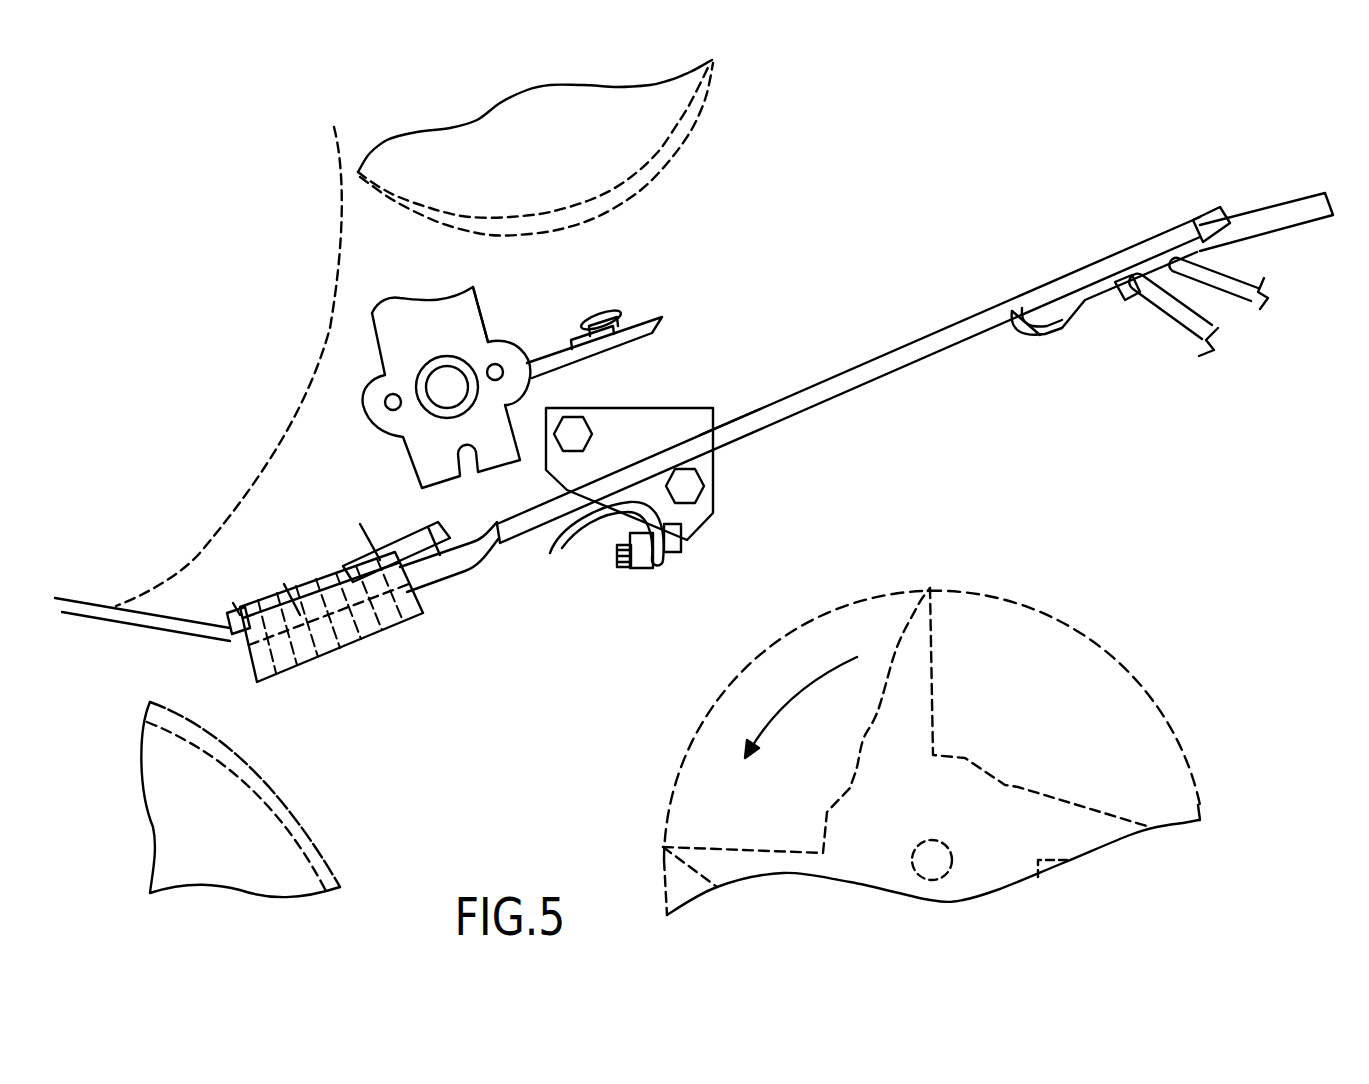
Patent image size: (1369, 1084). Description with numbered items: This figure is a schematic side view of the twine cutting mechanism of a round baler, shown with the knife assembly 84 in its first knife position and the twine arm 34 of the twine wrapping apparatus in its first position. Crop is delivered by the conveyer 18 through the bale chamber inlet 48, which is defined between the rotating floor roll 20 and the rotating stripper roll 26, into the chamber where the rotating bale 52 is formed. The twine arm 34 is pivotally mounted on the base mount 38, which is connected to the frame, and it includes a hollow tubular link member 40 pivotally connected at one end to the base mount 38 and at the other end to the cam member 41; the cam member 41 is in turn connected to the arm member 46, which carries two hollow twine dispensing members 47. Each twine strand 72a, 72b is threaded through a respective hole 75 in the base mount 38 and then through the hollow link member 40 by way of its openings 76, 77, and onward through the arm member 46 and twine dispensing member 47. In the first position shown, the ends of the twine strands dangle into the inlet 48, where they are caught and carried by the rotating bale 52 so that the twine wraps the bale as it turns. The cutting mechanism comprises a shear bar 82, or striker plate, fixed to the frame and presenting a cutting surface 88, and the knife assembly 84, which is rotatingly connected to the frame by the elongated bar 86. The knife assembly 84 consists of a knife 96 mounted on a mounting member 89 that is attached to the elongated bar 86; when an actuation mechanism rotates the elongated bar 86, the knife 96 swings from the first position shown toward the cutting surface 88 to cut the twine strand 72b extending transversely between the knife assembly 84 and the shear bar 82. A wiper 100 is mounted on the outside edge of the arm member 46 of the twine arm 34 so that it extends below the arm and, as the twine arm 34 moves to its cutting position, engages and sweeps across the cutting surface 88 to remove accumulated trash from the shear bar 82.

The conveyer 18 is at (975, 760).
The floor roll 20 is at (283, 803).
The stripper roll 26 is at (673, 138).
The twine arm 34 is at (877, 334).
The base mount 38 is at (1277, 232).
The link member 40 is at (852, 390).
The cam member 41 is at (377, 525).
The arm member 46 is at (283, 583).
The twine dispensing member 47 is at (233, 603).
The bale chamber inlet 48 is at (337, 622).
The bale 52 is at (224, 377).
The twine strand 72a is at (1267, 292).
The twine strand 72b is at (1078, 308).
The hole 75 is at (1198, 246).
The opening 76 is at (1025, 303).
The opening 77 is at (495, 524).
The shear bar 82 is at (556, 552).
The knife assembly 84 is at (667, 307).
The elongated bar 86 is at (447, 385).
The cutting surface 88 is at (645, 478).
The mounting member 89 is at (552, 350).
The knife 96 is at (648, 317).
The wiper 100 is at (310, 655).